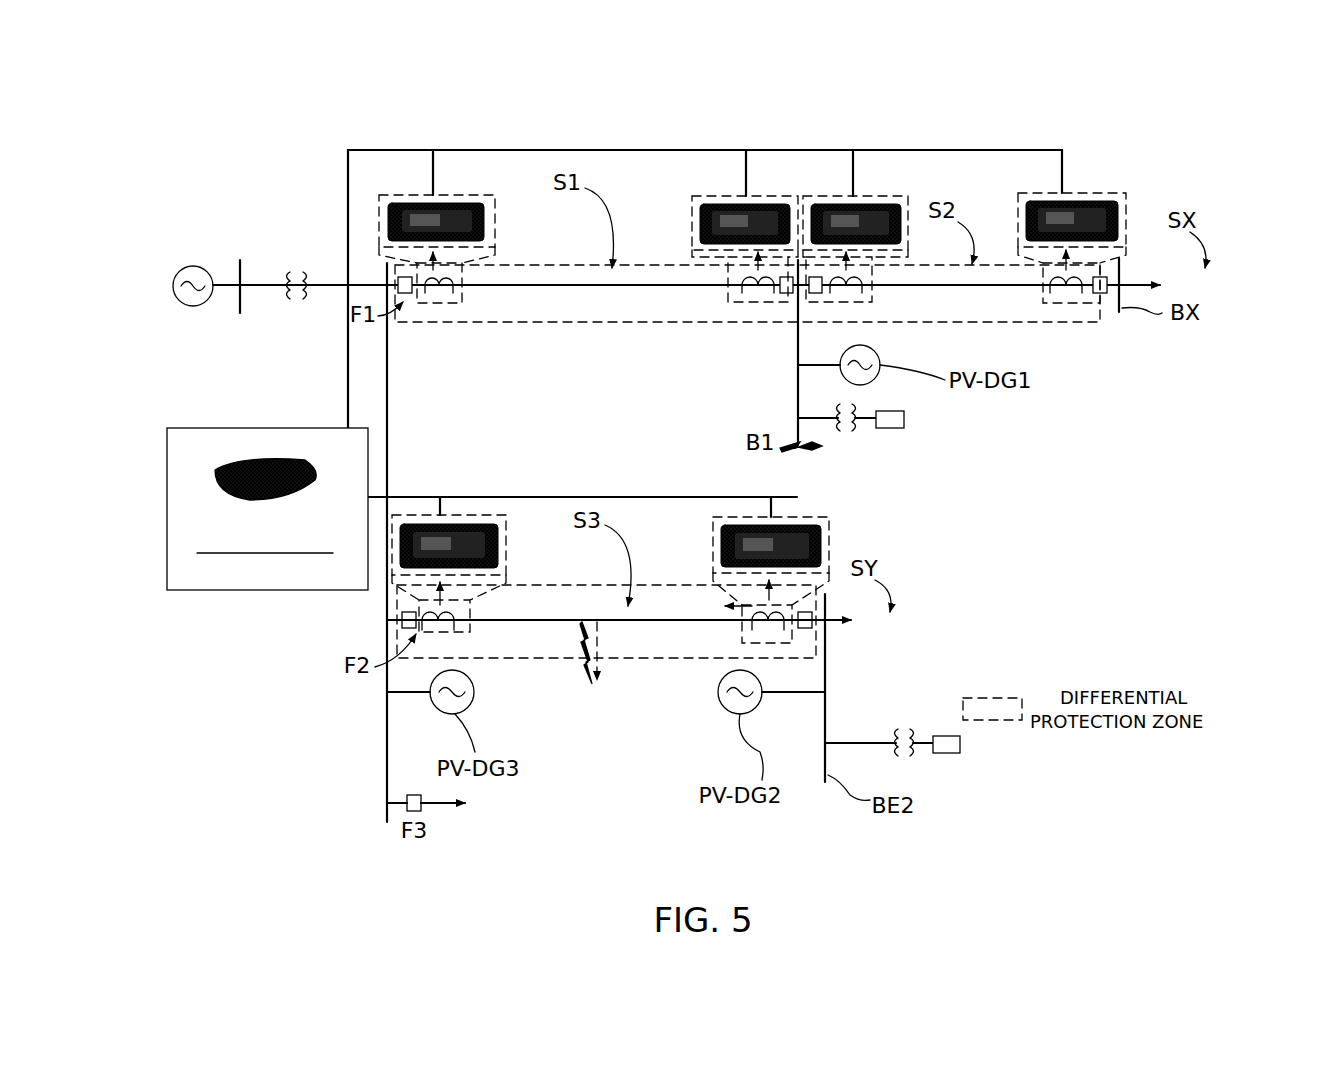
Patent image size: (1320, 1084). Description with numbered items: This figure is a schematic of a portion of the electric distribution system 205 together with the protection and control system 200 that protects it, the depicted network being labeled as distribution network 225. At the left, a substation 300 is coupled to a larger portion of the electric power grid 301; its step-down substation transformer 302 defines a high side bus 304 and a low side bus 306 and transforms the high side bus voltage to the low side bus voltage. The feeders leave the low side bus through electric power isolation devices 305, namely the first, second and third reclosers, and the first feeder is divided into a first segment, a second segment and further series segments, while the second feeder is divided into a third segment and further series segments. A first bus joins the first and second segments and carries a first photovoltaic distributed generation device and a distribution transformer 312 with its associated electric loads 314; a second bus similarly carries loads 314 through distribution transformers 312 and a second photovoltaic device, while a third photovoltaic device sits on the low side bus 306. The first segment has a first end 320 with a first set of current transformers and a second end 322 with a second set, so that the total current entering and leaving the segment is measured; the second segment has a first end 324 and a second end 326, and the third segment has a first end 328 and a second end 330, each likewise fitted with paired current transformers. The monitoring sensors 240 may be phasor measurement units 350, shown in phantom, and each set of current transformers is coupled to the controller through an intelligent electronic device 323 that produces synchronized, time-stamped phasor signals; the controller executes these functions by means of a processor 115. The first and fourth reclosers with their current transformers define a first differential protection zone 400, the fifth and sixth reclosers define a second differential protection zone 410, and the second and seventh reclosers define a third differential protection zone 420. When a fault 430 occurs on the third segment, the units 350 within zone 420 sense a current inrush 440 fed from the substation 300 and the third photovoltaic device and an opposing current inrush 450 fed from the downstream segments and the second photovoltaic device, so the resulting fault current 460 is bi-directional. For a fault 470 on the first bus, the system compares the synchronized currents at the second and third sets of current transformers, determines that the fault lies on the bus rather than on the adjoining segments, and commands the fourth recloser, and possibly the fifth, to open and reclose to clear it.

The electrical distribution network 225 is at (372, 142).
The substation 300 is at (301, 203).
The electric power grid 301 is at (192, 265).
The step-down substation transformer 302 is at (296, 266).
The high side bus 304 is at (256, 269).
The low side bus 306 is at (326, 284).
The electric power isolation devices 305 is at (398, 282).
The monitoring sensors 240 is at (445, 275).
The phasor measurement unit 350 is at (492, 198).
The intelligent electronic device 323 is at (455, 205).
The first end 320 is at (416, 300).
The second end 322 is at (766, 296).
The first end 324 is at (848, 296).
The second end 326 is at (1077, 296).
The first end 328 is at (423, 638).
The second end 330 is at (776, 632).
The distribution transformer 312 is at (850, 412).
The electric loads 314 is at (904, 425).
The first differential protection zone 400 is at (619, 238).
The second differential protection zone 410 is at (978, 236).
The third differential protection zone 420 is at (690, 664).
The fault 430 is at (588, 662).
The current inrush 440 is at (470, 600).
The current inrush 450 is at (740, 605).
The fault current 460 is at (600, 680).
The fault 470 is at (815, 452).
The protection and control system 200 is at (222, 596).
The electric distribution system 205 is at (310, 698).
The processor 115 is at (267, 509).